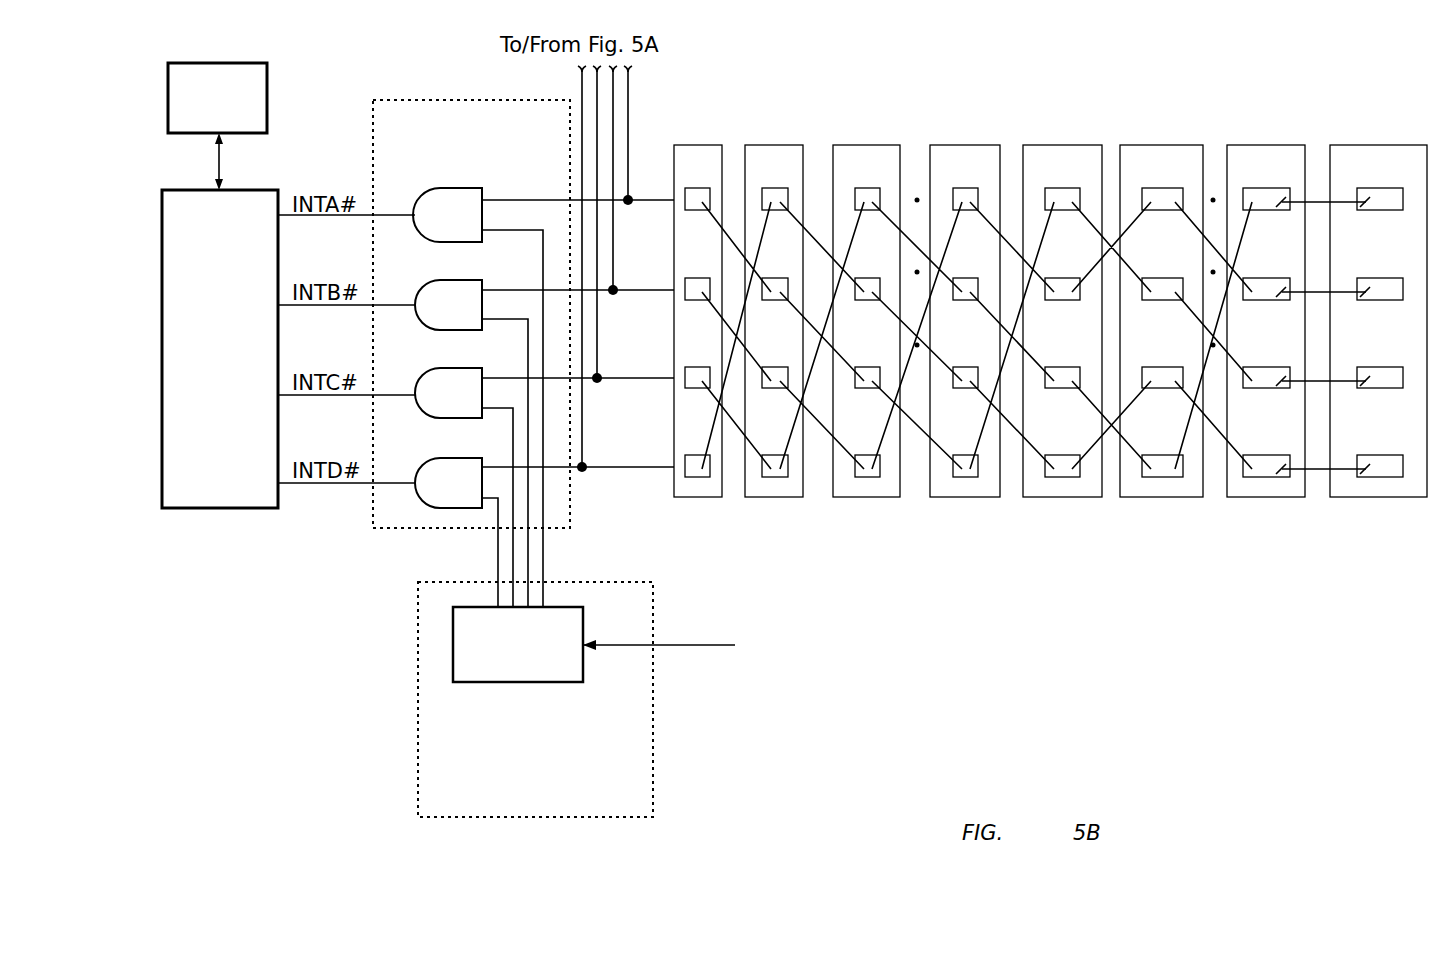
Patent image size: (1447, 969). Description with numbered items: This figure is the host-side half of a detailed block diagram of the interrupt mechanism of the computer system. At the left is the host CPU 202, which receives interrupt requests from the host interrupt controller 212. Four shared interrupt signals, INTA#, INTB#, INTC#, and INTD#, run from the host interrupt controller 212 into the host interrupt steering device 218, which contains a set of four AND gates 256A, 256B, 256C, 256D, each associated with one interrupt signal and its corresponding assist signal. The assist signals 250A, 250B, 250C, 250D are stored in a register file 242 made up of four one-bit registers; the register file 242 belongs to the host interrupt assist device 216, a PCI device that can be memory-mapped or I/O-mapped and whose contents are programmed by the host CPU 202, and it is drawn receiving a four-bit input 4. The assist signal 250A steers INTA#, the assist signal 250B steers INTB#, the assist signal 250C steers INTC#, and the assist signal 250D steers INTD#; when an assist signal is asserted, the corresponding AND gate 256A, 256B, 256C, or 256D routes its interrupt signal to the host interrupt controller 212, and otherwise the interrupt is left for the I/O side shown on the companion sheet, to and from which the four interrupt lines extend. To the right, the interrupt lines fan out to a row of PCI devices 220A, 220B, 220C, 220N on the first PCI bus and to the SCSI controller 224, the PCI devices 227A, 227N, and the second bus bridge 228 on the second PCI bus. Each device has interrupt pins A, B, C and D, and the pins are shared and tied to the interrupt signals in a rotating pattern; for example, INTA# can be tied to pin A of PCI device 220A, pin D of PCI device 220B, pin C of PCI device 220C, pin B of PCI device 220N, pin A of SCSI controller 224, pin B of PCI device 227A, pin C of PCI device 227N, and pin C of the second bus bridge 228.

The host CPU 202 is at (268, 96).
The host interrupt controller 212 is at (262, 190).
The host interrupt steering device 218 is at (462, 100).
The AND gate 256A is at (482, 191).
The AND gate 256B is at (463, 280).
The AND gate 256C is at (447, 368).
The AND gate 256D is at (436, 458).
The assist signal 250A is at (545, 420).
The assist signal 250B is at (530, 508).
The assist signal 250C is at (515, 544).
The assist signal 250D is at (496, 546).
The register file 242 is at (453, 623).
The 4-bit bus 4 is at (690, 652).
The host interrupt assist device 216 is at (535, 699).
The PCI device 220A is at (685, 143).
The PCI device 220B is at (767, 155).
The PCI device 220C is at (857, 143).
The PCI device 220N is at (960, 155).
The SCSI controller 224 is at (1065, 143).
The PCI device 227A is at (1160, 157).
The PCI device 227N is at (1263, 157).
The second bus bridge 228 is at (1385, 157).